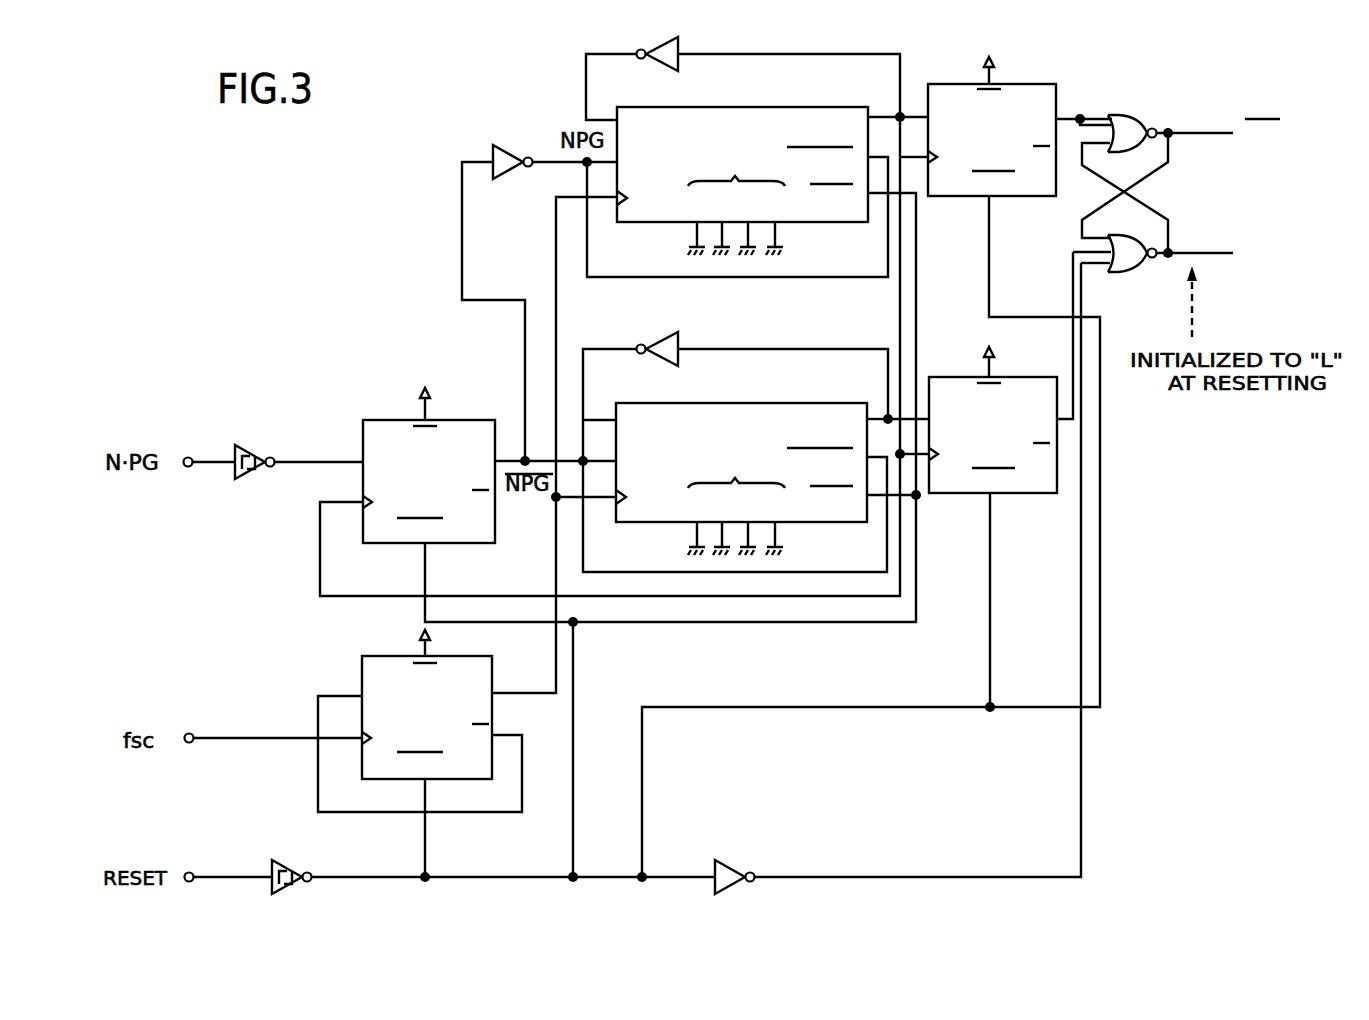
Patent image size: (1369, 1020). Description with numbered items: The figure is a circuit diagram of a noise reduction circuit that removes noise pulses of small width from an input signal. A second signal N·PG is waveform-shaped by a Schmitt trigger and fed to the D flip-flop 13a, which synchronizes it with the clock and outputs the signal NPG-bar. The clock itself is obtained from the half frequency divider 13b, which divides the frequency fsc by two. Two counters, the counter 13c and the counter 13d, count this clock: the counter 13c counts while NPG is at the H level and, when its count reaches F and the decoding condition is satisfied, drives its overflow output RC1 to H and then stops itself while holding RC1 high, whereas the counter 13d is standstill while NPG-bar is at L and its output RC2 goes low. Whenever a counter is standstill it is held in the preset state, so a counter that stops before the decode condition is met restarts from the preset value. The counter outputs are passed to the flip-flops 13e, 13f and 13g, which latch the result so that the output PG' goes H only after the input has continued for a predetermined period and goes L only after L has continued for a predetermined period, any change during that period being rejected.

The D flip-flop 13a is at (400, 420).
The ½ frequency divider 13b is at (395, 656).
The counter 13c is at (730, 106).
The counter 13d is at (718, 403).
The flip-flop 13e is at (1003, 84).
The flip-flop 13f is at (1034, 493).
The flip-flop 13g is at (1157, 114).